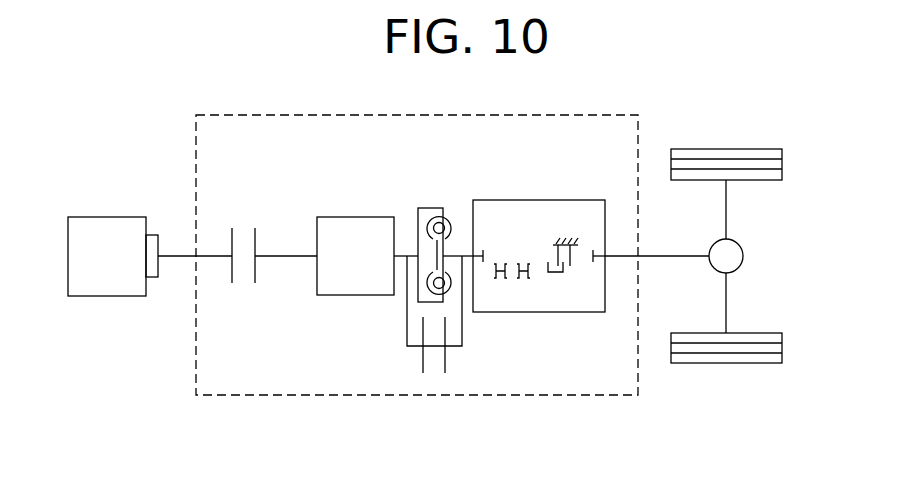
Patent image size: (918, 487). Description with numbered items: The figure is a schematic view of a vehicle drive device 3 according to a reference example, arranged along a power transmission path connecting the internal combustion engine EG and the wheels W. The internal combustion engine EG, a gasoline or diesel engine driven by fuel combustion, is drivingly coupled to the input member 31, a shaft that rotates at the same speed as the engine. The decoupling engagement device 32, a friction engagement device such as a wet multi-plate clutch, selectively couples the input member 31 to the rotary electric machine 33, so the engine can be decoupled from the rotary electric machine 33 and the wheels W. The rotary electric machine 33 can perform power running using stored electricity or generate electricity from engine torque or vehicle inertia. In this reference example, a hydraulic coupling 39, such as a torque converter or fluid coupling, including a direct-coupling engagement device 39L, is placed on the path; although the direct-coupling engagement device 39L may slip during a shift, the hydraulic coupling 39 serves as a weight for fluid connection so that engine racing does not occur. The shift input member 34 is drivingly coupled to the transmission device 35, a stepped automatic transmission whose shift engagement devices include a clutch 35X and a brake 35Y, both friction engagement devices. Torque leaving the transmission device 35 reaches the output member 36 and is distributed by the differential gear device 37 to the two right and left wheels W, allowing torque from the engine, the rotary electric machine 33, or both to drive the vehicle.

The vehicle drive device 3 is at (203, 397).
The internal combustion engine EG is at (82, 217).
The input member 31 is at (203, 258).
The decoupling engagement device 32 is at (241, 214).
The rotary electric machine 33 is at (340, 217).
The hydraulic coupling 39 is at (431, 199).
The direct-coupling engagement device 39L is at (435, 374).
The shift input member 34 is at (465, 250).
The transmission device 35 is at (523, 200).
The clutch 35X is at (513, 288).
The brake 35Y is at (563, 288).
The output member 36 is at (622, 253).
The differential gear device 37 is at (740, 243).
The wheels W is at (698, 148).